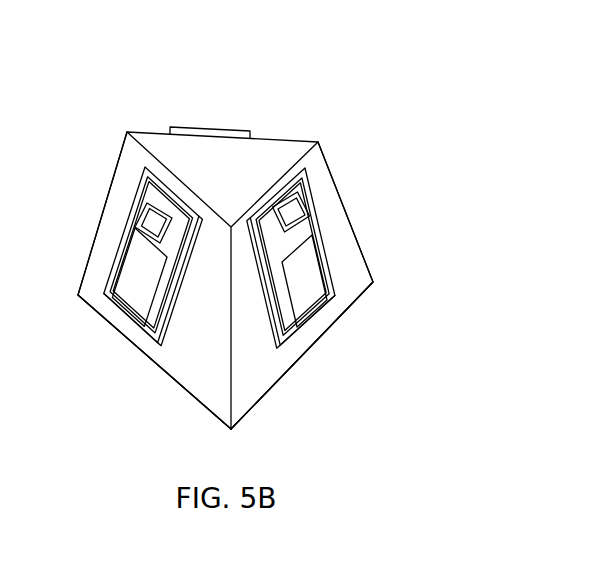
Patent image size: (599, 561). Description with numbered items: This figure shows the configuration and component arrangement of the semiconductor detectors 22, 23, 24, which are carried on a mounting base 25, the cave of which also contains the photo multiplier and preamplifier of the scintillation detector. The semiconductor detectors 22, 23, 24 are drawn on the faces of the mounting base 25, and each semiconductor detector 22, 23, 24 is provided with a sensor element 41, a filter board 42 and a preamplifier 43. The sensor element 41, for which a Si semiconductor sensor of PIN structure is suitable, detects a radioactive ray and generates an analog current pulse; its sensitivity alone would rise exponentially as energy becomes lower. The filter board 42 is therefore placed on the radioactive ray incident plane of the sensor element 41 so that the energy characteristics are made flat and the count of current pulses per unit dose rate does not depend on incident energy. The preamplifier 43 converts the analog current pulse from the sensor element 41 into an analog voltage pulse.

The semiconductor detector 22 is at (312, 322).
The semiconductor detector 23 is at (103, 320).
The semiconductor detector 24 is at (228, 126).
The mounting base 25 is at (212, 418).
The sensor element 41 is at (150, 186).
The filter board 42 is at (156, 214).
The preamplifier 43 is at (140, 266).